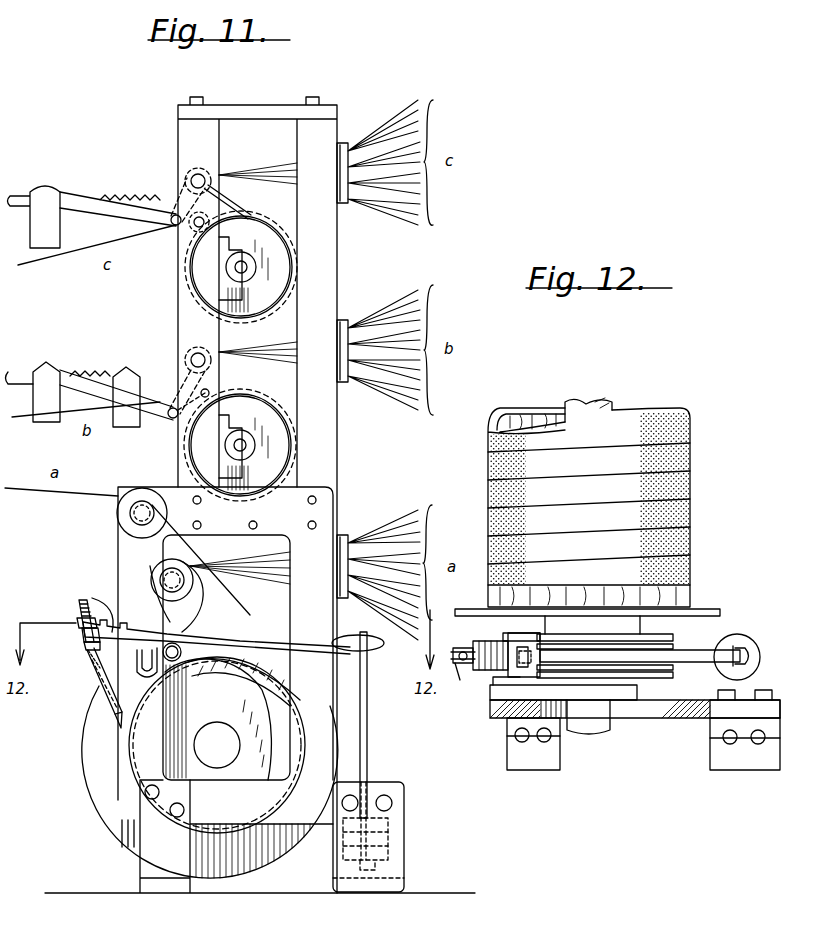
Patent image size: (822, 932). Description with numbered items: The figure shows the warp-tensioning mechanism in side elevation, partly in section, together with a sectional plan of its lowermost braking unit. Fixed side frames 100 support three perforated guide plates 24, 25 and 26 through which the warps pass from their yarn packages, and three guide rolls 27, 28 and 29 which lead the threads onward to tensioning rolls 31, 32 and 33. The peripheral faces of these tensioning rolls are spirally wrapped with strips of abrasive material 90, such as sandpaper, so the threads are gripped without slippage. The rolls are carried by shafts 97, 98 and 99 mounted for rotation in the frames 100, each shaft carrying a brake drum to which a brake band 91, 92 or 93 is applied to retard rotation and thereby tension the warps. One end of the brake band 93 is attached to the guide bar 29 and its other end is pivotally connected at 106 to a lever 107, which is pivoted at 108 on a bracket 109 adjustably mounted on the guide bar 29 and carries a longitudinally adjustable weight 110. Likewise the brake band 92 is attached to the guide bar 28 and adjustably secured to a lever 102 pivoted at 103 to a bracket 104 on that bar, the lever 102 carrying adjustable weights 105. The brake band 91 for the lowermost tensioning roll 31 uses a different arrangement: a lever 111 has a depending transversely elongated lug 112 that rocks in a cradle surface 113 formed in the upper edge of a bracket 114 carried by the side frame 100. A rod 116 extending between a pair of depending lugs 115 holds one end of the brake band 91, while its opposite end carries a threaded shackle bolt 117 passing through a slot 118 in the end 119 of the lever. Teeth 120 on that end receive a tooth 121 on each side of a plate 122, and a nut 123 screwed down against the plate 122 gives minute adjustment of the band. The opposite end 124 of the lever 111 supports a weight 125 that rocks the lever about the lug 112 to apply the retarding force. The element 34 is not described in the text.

In FIG. 11, the fixed frame 100 is at (245, 105).
In FIG. 12, the fixed frame 100 is at (680, 718).
In FIG. 11, the guide plate 26 is at (344, 143).
In FIG. 11, the guide plate 25 is at (344, 320).
In FIG. 11, the guide plate 24 is at (344, 535).
In FIG. 11, the guide roll 29 is at (198, 172).
In FIG. 11, the guide roll 28 is at (198, 350).
In FIG. 11, the guide roll 27 is at (170, 580).
In FIG. 11, the bracket 109 is at (176, 210).
In FIG. 11, the pivot 108 is at (172, 216).
In FIG. 11, the pivotal connection 106 is at (194, 226).
In FIG. 11, the lever 107 is at (84, 192).
In FIG. 11, the weight 110 is at (48, 228).
In FIG. 11, the brake band 93 is at (230, 208).
In FIG. 11, the shaft 99 is at (236, 268).
In FIG. 11, the tensioning roll 33 is at (278, 250).
In FIG. 11, the abrasive material 90 is at (257, 312).
In FIG. 12, the abrasive material 90 is at (694, 486).
In FIG. 11, the bracket 104 is at (172, 398).
In FIG. 11, the pivot 103 is at (170, 418).
In FIG. 11, the lever 102 is at (82, 372).
In FIG. 11, the adjustable weight 105 is at (45, 420).
In FIG. 11, the brake band 92 is at (207, 391).
In FIG. 11, the shaft 98 is at (242, 442).
In FIG. 11, the tensioning roll 32 is at (282, 436).
In FIG. 11, the boss 34 is at (140, 513).
In FIG. 11, the depending lug 115 is at (222, 634).
In FIG. 11, the rod 116 is at (183, 658).
In FIG. 11, the lever 111 is at (147, 618).
In FIG. 11, the teeth 120 is at (92, 598).
In FIG. 11, the nut 123 is at (80, 606).
In FIG. 11, the plate 122 is at (77, 623).
In FIG. 11, the tooth 121 is at (84, 636).
In FIG. 11, the lever end 119 is at (96, 648).
In FIG. 12, the lever end 119 is at (458, 680).
In FIG. 11, the shackle bolt 117 is at (95, 663).
In FIG. 12, the shackle bolt 117 is at (460, 650).
In FIG. 11, the lug 112 is at (104, 680).
In FIG. 12, the lug 112 is at (524, 643).
In FIG. 11, the cradle surface 113 is at (112, 698).
In FIG. 11, the bracket 114 is at (116, 718).
In FIG. 12, the bracket 114 is at (518, 680).
In FIG. 11, the brake band 91 is at (270, 665).
In FIG. 12, the brake band 91 is at (680, 648).
In FIG. 11, the lever end 124 is at (368, 648).
In FIG. 12, the lever end 124 is at (700, 662).
In FIG. 11, the weight 125 is at (405, 831).
In FIG. 12, the weight 125 is at (748, 646).
In FIG. 12, the shaft 97 is at (585, 402).
In FIG. 12, the tensioning roll 31 is at (690, 608).
In FIG. 12, the slot 118 is at (530, 660).